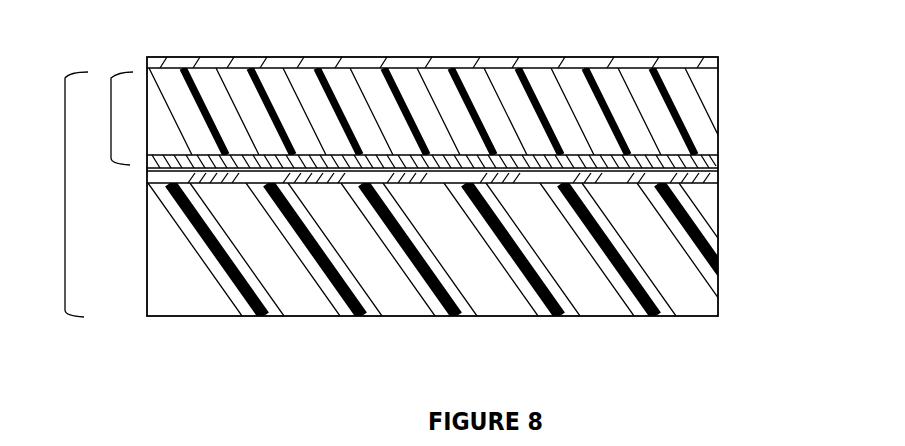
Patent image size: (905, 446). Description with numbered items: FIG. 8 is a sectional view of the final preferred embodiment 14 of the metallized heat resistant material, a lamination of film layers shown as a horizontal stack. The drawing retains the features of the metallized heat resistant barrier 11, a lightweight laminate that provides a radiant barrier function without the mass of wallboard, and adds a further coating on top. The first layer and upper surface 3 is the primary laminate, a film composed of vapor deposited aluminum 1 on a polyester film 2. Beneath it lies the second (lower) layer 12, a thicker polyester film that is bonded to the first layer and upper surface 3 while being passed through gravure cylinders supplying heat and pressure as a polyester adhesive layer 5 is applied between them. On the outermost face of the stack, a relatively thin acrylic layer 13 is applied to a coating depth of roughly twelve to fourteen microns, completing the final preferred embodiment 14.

The vapor deposited aluminum 1 is at (722, 164).
The polyester film 2 is at (722, 110).
The first layer and upper surface 3 is at (106, 118).
The polyester adhesive layer 5 is at (722, 178).
The metallized heat resistant barrier 11 is at (51, 194).
The second (lower) layer 12 is at (722, 244).
The acrylic layer 13 is at (722, 62).
The final preferred embodiment 14 is at (238, 346).